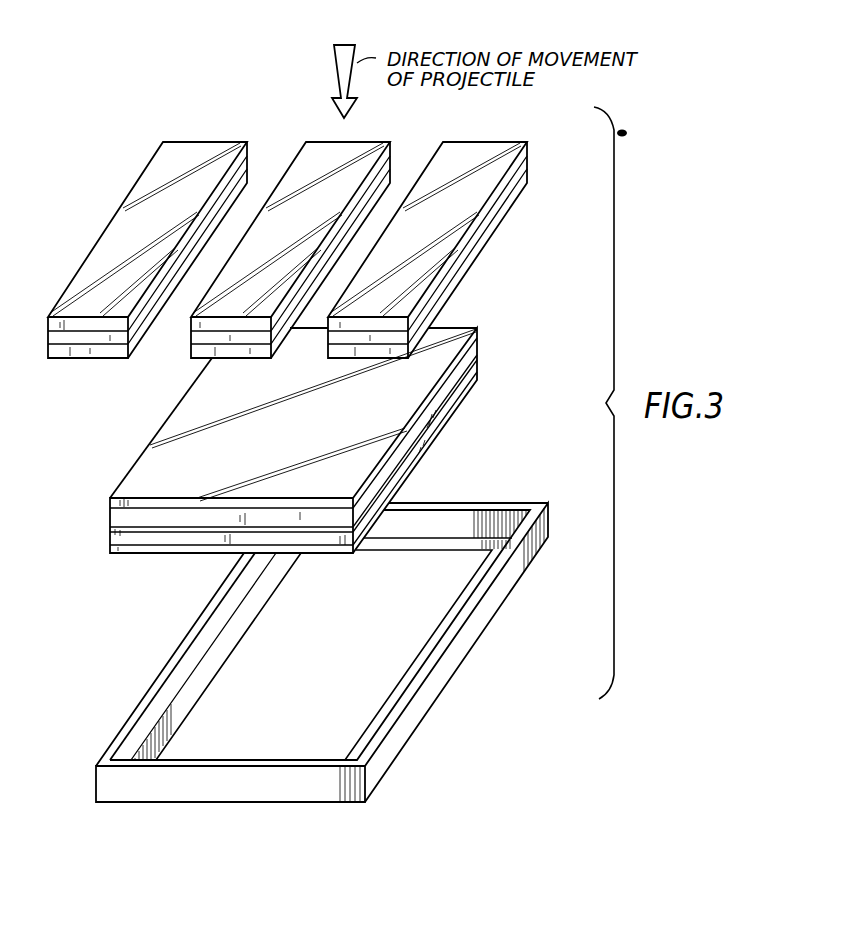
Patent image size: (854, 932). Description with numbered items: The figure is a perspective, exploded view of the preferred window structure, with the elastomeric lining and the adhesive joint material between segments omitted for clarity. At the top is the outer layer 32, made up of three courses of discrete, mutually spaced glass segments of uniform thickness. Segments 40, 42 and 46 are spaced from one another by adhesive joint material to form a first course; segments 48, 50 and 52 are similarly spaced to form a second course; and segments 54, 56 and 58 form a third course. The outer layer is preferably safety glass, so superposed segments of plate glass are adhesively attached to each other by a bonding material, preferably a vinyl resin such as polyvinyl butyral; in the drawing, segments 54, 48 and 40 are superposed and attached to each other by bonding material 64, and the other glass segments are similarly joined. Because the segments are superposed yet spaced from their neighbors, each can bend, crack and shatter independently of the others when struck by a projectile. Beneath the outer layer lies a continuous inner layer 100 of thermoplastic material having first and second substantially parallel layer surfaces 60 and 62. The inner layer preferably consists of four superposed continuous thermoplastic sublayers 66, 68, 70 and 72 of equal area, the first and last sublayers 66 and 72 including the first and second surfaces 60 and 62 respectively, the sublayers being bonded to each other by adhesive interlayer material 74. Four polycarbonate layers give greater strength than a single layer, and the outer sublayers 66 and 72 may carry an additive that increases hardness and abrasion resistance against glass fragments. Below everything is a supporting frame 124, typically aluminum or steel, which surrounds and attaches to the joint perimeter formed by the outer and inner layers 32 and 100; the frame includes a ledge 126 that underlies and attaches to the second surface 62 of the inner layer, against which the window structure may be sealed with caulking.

The outer layer 32 is at (98, 208).
The glass segment 40 is at (248, 180).
The glass segment 42 is at (391, 180).
The glass segment 46 is at (528, 182).
The glass segment 48 is at (248, 158).
The glass segment 50 is at (391, 160).
The glass segment 52 is at (528, 160).
The glass segment 54 is at (248, 143).
The glass segment 56 is at (391, 143).
The glass segment 58 is at (527, 143).
The first layer surface 60 is at (153, 452).
The second layer surface 62 is at (455, 413).
The bonding material 64 is at (48, 344).
The thermoplastic sublayer 66 is at (479, 331).
The thermoplastic sublayer 68 is at (479, 347).
The thermoplastic sublayer 70 is at (479, 363).
The thermoplastic sublayer 72 is at (480, 380).
The adhesive interlayer material 74 is at (457, 268).
The inner layer 100 is at (94, 515).
The supporting frame 124 is at (456, 653).
The ledge 126 is at (232, 632).